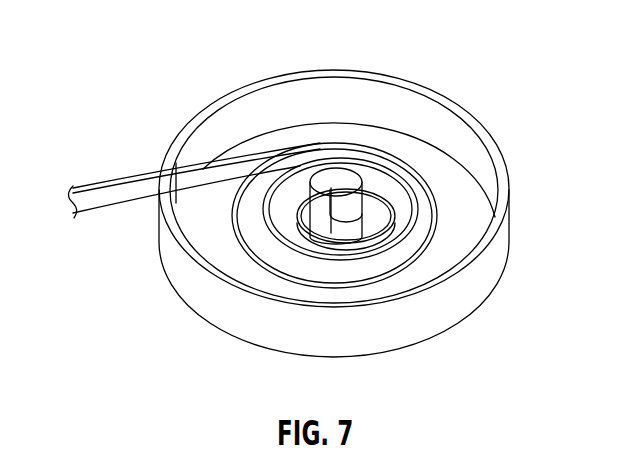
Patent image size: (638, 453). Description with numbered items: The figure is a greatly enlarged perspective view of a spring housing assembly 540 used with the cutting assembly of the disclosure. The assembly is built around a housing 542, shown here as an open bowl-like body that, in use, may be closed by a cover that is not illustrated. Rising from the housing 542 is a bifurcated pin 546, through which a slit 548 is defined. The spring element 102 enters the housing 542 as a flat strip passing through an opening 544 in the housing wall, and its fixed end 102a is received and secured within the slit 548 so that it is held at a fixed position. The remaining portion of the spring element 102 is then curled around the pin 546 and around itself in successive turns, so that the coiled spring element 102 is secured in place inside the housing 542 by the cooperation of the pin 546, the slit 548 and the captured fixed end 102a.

The spring housing assembly 540 is at (299, 186).
The housing 542 is at (472, 282).
The wall slot 544 is at (191, 170).
The bifurcated pin 546 is at (320, 230).
The slit 548 is at (393, 129).
The spring element 102 is at (103, 208).
The fixed end 102a is at (340, 165).